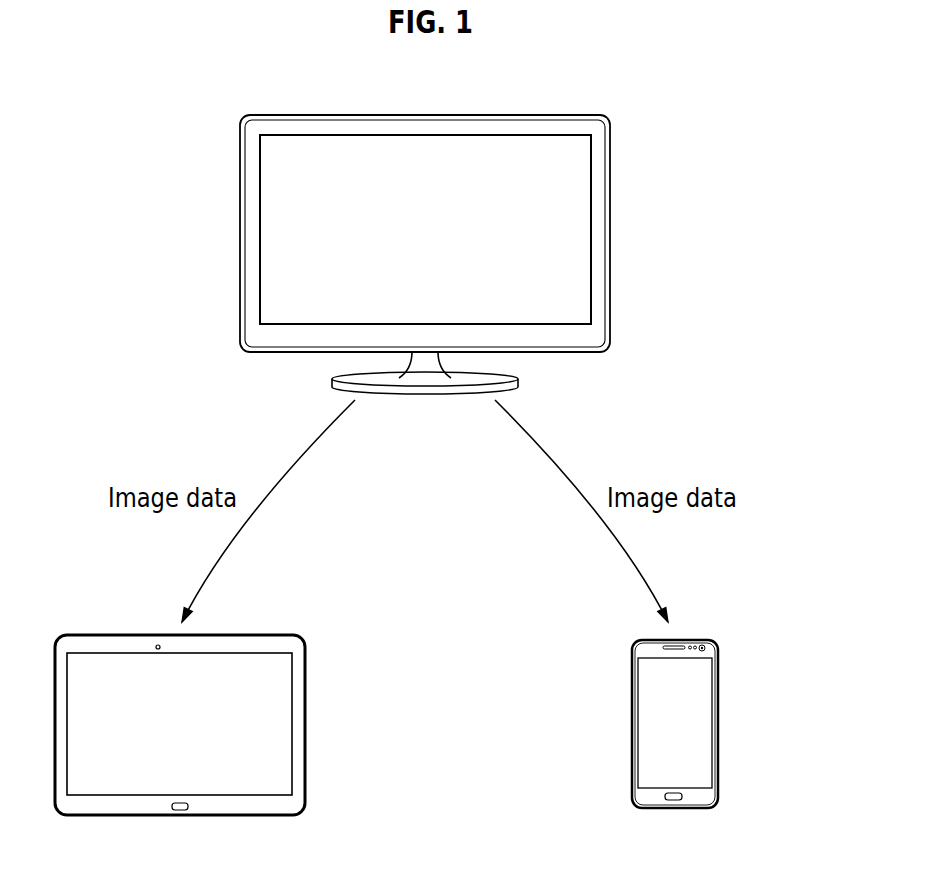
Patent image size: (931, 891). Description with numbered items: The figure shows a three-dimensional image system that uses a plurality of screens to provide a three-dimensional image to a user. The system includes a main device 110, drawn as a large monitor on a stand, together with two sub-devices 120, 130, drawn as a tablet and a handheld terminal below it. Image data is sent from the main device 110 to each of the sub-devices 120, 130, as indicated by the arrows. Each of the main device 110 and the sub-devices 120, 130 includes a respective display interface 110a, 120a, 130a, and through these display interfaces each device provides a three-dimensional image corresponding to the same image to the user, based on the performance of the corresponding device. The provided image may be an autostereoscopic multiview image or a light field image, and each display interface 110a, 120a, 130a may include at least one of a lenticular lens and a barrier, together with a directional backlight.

The main device 110 is at (428, 117).
The display interface 110a is at (580, 222).
The sub-device 120 is at (268, 638).
The display interface 120a is at (277, 733).
The sub-device 130 is at (692, 640).
The display interface 130a is at (697, 733).